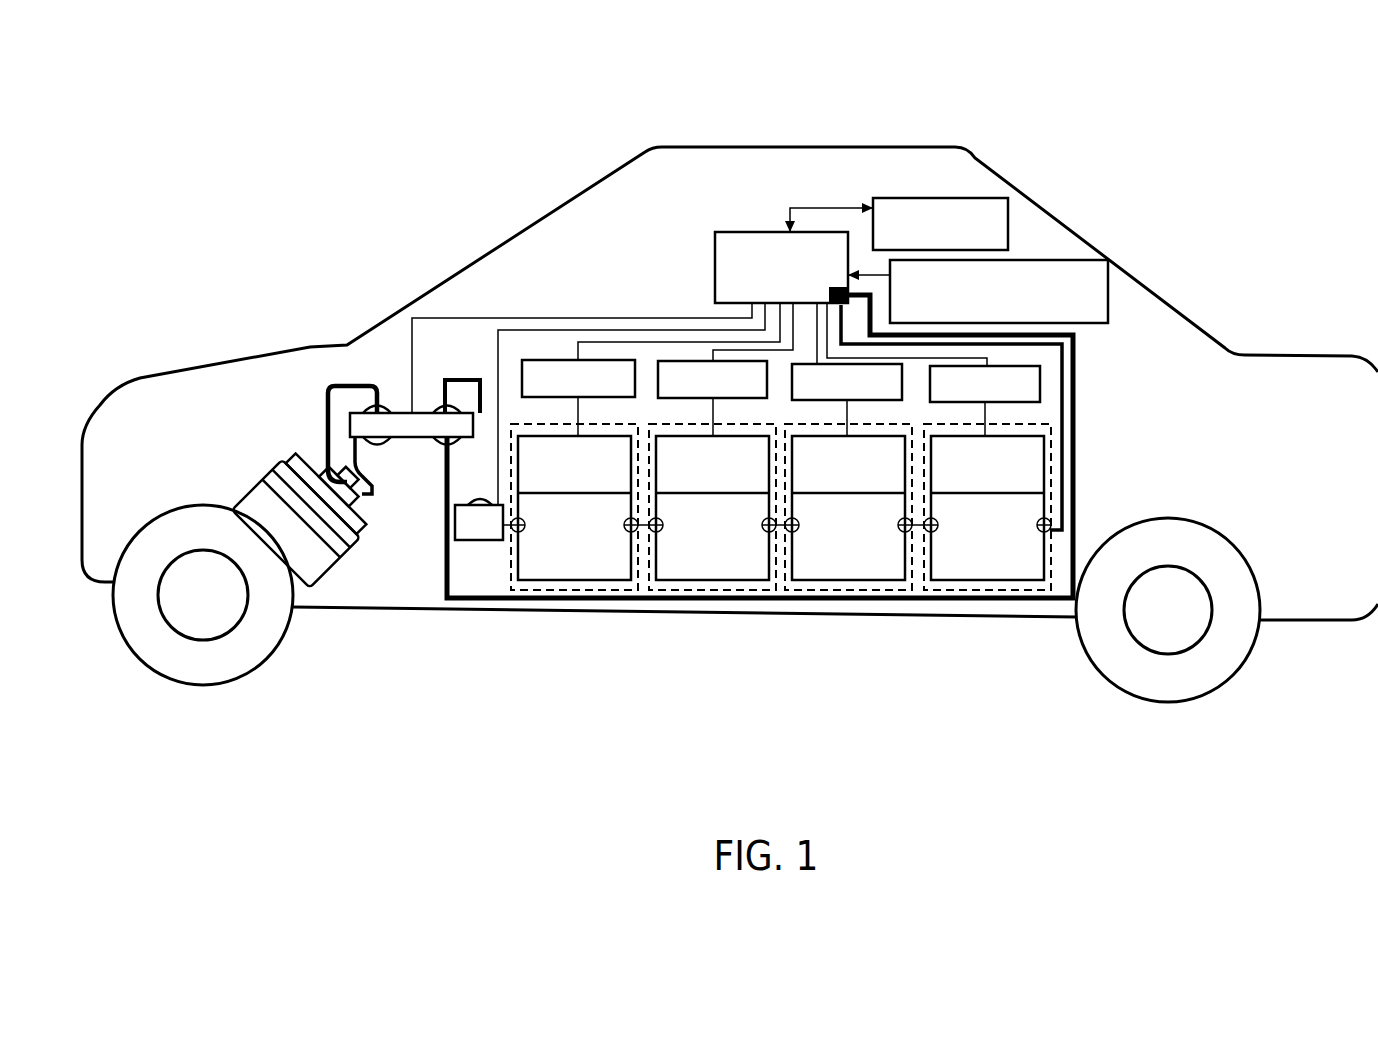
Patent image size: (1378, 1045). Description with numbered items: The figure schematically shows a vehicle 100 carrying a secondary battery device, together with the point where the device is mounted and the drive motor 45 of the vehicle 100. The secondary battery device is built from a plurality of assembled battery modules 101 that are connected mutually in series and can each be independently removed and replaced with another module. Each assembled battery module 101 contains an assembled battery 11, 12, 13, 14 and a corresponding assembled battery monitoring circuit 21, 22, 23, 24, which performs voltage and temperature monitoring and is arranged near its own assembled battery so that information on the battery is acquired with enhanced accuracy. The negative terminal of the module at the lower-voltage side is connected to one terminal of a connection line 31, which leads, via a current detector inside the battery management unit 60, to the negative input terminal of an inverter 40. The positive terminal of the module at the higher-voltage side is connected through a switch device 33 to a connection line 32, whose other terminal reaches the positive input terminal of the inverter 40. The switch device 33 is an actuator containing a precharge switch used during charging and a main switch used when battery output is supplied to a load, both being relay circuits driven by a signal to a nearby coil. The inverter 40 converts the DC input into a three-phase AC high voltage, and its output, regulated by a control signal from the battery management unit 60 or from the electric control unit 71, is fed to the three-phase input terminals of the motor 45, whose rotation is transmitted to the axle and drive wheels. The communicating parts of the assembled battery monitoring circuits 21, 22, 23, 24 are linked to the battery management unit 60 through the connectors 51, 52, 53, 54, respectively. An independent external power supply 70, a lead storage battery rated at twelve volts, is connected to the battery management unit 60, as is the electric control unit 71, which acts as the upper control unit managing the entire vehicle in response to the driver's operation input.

The vehicle 100 is at (380, 608).
The motor 45 is at (257, 486).
The inverter 40 is at (415, 440).
The connection line 32 is at (475, 380).
The switch device 33 is at (482, 541).
The connection line 31 is at (446, 561).
The battery management unit 60 is at (754, 232).
The electric control unit 71 is at (937, 198).
The external power supply 70 is at (1032, 260).
The connector 54 is at (588, 397).
The connector 53 is at (722, 398).
The connector 52 is at (858, 400).
The connector 51 is at (1000, 402).
The assembled battery 14 is at (543, 580).
The assembled battery 13 is at (667, 580).
The assembled battery 12 is at (828, 580).
The assembled battery 11 is at (978, 580).
The assembled battery monitoring circuit 24 is at (513, 424).
The assembled battery monitoring circuit 23 is at (653, 480).
The assembled battery monitoring circuit 22 is at (908, 470).
The assembled battery monitoring circuit 21 is at (1052, 440).
The assembled battery module 101 is at (513, 608).